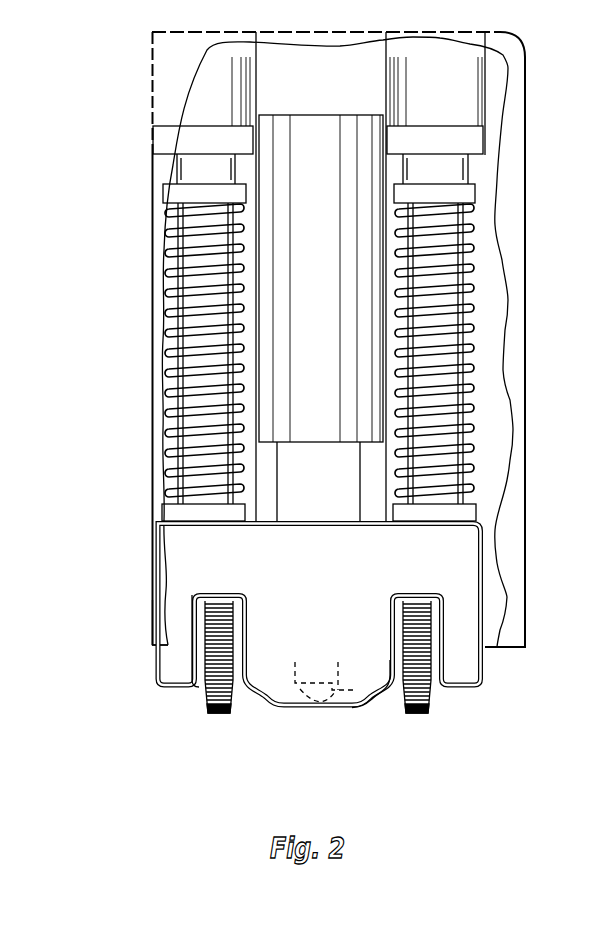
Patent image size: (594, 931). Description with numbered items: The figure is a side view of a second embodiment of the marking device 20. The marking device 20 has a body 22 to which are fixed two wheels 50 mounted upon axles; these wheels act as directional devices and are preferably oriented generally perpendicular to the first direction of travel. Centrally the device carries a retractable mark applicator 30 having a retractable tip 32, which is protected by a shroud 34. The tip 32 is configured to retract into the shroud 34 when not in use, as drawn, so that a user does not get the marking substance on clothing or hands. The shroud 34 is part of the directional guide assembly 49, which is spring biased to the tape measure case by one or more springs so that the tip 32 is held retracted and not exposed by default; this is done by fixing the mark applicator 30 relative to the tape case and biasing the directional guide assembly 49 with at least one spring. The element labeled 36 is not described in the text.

The marking device 20 is at (132, 374).
The body 22 is at (175, 658).
The retractable mark applicator 30 is at (334, 752).
The retractable tip 32 is at (373, 700).
The shroud 34 is at (345, 708).
The pressure piece 36 is at (350, 217).
The directional guide assembly 49 is at (187, 762).
The wheels 50 is at (225, 716).